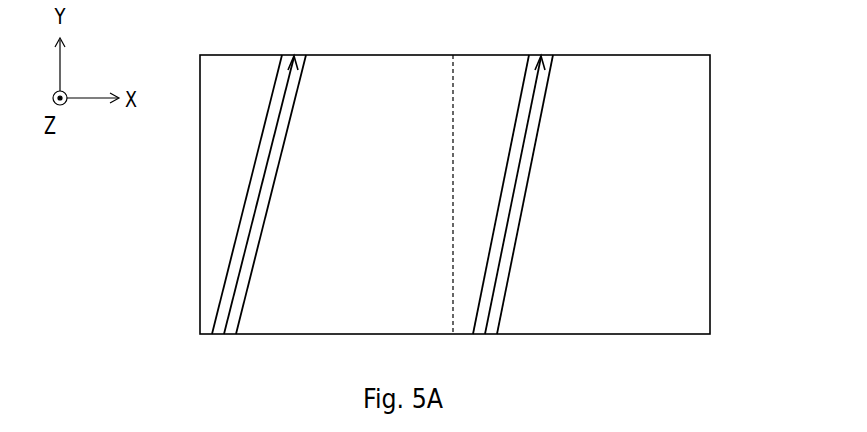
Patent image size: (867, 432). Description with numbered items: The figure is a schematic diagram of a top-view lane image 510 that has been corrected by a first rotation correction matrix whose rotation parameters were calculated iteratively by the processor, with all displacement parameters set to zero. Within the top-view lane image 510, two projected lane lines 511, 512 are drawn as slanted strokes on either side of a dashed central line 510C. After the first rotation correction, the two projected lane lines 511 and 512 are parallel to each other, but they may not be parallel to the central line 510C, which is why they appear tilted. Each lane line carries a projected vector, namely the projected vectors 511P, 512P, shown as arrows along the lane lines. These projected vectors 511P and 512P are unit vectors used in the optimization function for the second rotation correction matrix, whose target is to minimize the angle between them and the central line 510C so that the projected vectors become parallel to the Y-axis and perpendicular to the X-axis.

The top-view lane image 510 is at (710, 152).
The central line 510C is at (448, 82).
The projected lane line 511 is at (284, 171).
The projected vector 511P is at (270, 158).
The projected lane line 512 is at (540, 171).
The projected vector 512P is at (522, 160).